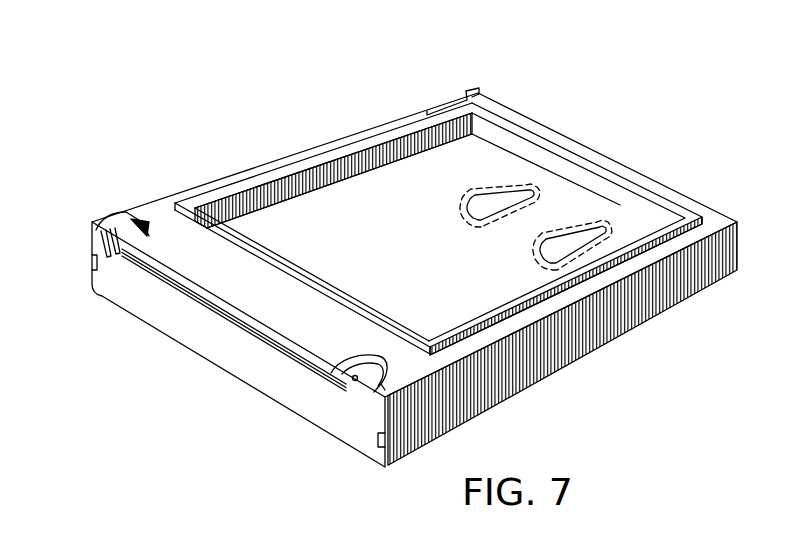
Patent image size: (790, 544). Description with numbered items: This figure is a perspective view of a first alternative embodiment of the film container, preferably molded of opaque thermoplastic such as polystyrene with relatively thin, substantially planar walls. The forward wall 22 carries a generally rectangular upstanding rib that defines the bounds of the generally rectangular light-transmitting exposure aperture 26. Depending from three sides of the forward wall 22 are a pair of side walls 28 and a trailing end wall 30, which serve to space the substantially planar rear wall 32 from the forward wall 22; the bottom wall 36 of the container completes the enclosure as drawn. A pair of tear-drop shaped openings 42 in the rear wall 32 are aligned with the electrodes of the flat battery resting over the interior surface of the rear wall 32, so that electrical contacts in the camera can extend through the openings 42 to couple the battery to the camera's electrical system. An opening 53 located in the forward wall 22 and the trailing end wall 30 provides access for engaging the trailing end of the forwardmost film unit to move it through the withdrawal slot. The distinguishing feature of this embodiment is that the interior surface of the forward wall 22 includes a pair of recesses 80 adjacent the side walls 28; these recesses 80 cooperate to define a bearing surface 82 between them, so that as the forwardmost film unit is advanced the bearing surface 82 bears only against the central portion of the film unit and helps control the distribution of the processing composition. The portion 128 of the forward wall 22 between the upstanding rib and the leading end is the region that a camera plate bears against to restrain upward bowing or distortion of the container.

The forward wall 22 is at (170, 238).
The exposure aperture 26 is at (324, 162).
The side wall 28 is at (316, 186).
The trailing end wall 30 is at (578, 176).
The rear wall 32 is at (432, 259).
The bottom wall 36 is at (243, 360).
The tear-drop shaped openings 42 is at (497, 207).
The opening 53 is at (470, 92).
The recesses 80 is at (128, 212).
The bearing surface 82 is at (238, 310).
The forward wall portion 128 is at (288, 296).